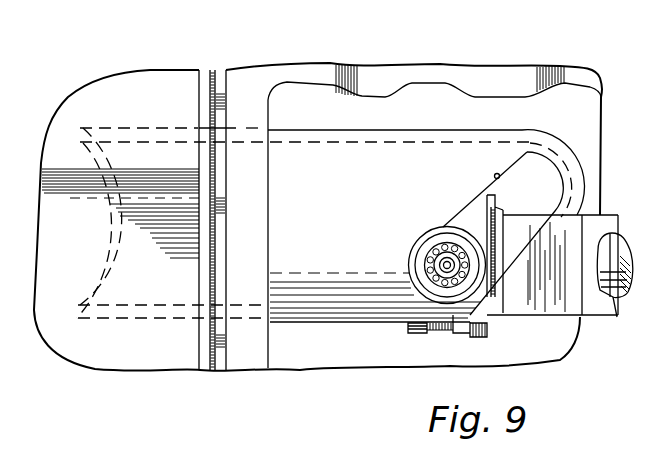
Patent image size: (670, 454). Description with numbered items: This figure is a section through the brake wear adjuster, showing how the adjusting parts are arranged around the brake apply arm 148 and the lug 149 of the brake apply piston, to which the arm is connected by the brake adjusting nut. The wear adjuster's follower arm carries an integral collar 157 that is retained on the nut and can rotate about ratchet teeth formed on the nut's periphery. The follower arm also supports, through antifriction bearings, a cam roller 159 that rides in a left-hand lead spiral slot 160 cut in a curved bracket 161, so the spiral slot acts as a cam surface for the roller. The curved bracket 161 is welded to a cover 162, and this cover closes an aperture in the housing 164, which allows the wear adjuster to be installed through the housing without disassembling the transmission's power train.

The brake apply arm 148 is at (617, 317).
The lug 149 is at (550, 308).
The integral collar 157 is at (407, 331).
The cam roller 159 is at (431, 246).
The left-hand lead spiral slot 160 is at (494, 175).
The curved bracket 161 is at (371, 143).
The cover 162 is at (113, 86).
The housing 164 is at (253, 72).